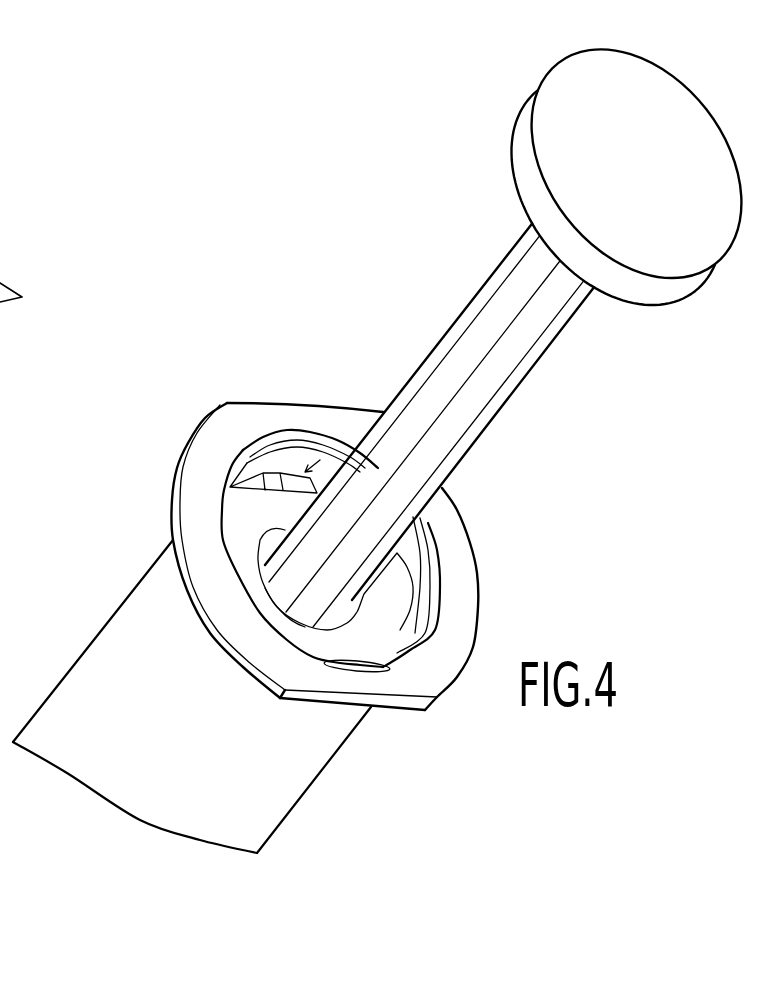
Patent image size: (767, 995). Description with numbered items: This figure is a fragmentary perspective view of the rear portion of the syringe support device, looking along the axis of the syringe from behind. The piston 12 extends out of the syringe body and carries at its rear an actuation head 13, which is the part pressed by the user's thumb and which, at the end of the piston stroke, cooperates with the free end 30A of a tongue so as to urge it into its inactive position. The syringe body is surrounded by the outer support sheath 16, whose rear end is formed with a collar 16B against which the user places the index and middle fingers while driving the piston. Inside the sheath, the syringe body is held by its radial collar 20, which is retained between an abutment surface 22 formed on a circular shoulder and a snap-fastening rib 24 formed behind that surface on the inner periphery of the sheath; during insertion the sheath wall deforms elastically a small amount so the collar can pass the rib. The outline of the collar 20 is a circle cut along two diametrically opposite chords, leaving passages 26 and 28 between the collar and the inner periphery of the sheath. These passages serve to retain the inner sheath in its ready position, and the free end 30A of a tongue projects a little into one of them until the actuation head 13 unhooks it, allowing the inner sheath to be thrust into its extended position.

The piston 12 is at (455, 325).
The actuation head 13 is at (695, 117).
The outer support sheath 16 is at (87, 672).
The collar 16B is at (205, 462).
The radial collar 20 is at (245, 553).
The abutment surface 22 is at (245, 460).
The snap-fastening rib 24 is at (413, 573).
The passage 26 is at (337, 457).
The passage 28 is at (363, 667).
The free end of tongue 30A is at (283, 477).